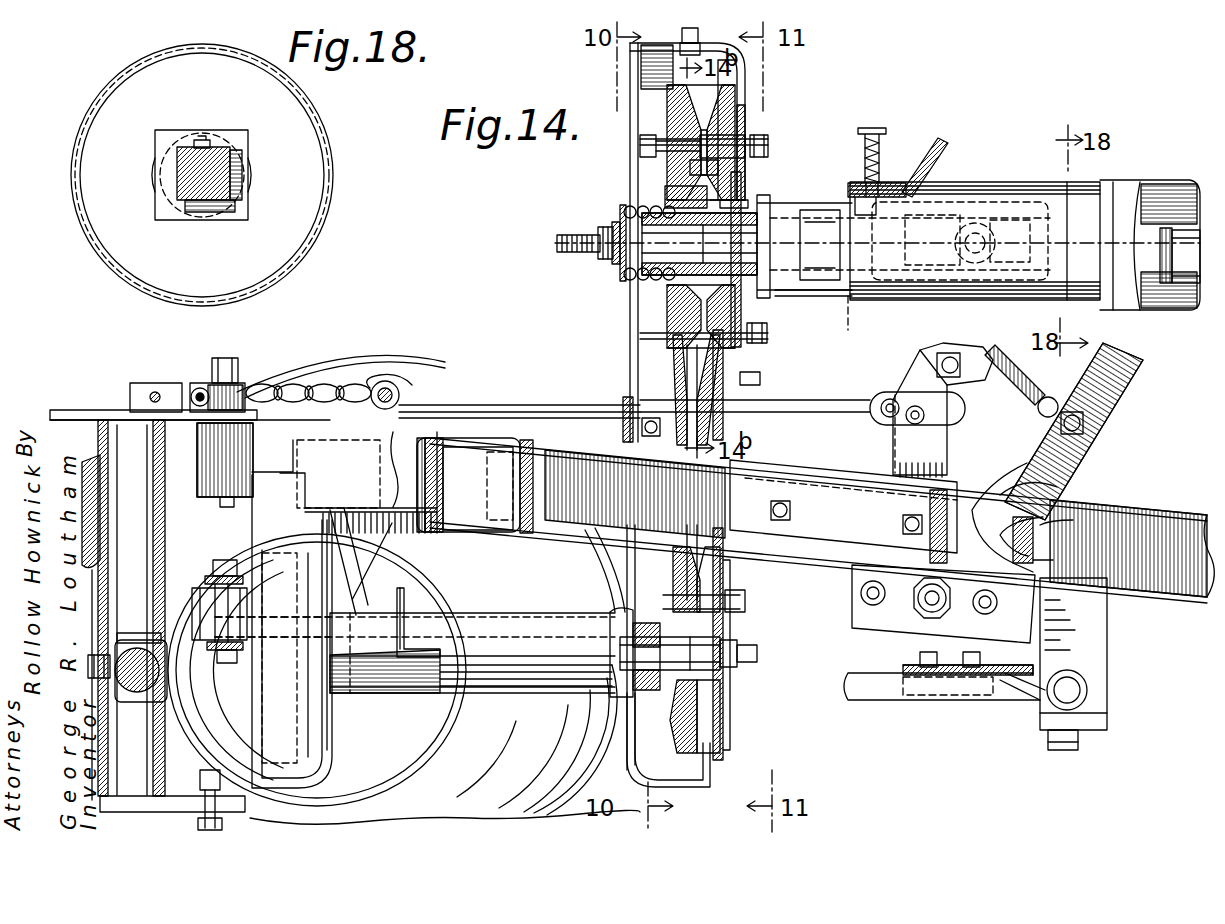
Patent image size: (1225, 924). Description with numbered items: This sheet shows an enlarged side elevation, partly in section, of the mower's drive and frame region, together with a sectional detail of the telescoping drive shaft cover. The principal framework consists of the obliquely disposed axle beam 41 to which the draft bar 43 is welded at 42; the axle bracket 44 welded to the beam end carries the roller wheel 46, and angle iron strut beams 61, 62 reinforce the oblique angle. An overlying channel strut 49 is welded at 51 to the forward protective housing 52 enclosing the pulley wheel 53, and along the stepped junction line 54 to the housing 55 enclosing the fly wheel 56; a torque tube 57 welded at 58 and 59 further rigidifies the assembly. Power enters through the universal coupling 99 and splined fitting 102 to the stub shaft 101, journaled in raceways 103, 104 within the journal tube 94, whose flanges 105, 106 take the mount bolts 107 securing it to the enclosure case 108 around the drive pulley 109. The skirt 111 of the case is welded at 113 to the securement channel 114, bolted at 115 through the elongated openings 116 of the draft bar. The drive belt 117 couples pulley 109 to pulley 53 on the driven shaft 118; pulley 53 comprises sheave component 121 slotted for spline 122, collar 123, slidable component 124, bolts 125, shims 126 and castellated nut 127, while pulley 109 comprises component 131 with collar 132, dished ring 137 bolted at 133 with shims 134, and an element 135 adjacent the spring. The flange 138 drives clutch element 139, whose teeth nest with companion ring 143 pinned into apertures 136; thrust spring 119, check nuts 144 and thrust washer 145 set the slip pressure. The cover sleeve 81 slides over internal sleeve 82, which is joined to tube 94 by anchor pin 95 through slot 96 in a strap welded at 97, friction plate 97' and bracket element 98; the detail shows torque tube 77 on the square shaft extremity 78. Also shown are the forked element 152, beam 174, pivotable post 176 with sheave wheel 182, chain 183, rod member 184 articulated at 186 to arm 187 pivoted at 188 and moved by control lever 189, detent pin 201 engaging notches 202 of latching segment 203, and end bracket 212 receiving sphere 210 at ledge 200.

In FIG. 14, the axle beam 41 is at (460, 534).
In FIG. 14, the weld 42 is at (533, 536).
In FIG. 14, the draft bar 43 is at (560, 445).
In FIG. 14, the axle bracket 44 is at (236, 545).
In FIG. 14, the roller wheel 46 is at (350, 366).
In FIG. 14, the channel strut 49 is at (412, 396).
In FIG. 14, the weld 51 is at (622, 430).
In FIG. 14, the protective housing 52 is at (627, 737).
In FIG. 14, the pulley wheel 53 is at (728, 690).
In FIG. 14, the stepped junction line 54 is at (256, 527).
In FIG. 14, the protective housing 55 is at (324, 733).
In FIG. 14, the fly wheel 56 is at (252, 717).
In FIG. 14, the torque tube 57 is at (493, 698).
In FIG. 14, the weld 58 is at (593, 580).
In FIG. 14, the weld 59 is at (348, 617).
In FIG. 14, the angle iron strut beam 61 is at (440, 595).
In FIG. 14, the angle iron strut beam 62 is at (401, 592).
In FIG. 18, the torque tube 77 is at (232, 134).
In FIG. 14, the torque tube 77 is at (1162, 270).
In FIG. 18, the shaft extremity 78 is at (178, 192).
In FIG. 14, the shaft extremity 78 is at (1162, 306).
In FIG. 18, the protective cover sleeve 81 is at (92, 104).
In FIG. 14, the protective cover sleeve 81 is at (1127, 182).
In FIG. 18, the internal sleeve 82 is at (315, 187).
In FIG. 14, the internal sleeve 82 is at (990, 183).
In FIG. 14, the journal tube 94 is at (772, 200).
In FIG. 14, the spring loaded anchor pin 95 is at (884, 147).
In FIG. 14, the elongated slot 96 is at (850, 192).
In FIG. 14, the weld 97 is at (802, 261).
In FIG. 14, the friction plate 97' is at (862, 154).
In FIG. 14, the bracket element 98 is at (925, 142).
In FIG. 14, the universal coupling 99 is at (958, 232).
In FIG. 14, the stub shaft 101 is at (766, 296).
In FIG. 14, the splined fitting 102 is at (906, 218).
In FIG. 14, the roller bearing raceway 103 is at (865, 317).
In FIG. 14, the roller bearing raceway 104 is at (736, 132).
In FIG. 14, the flange 105 is at (746, 150).
In FIG. 14, the flange 106 is at (742, 378).
In FIG. 14, the mount bolt 107 is at (770, 148).
In FIG. 14, the enclosure case 108 is at (760, 56).
In FIG. 14, the drive pulley 109 is at (654, 78).
In FIG. 14, the skirt 111 is at (752, 402).
In FIG. 14, the weld 113 is at (748, 458).
In FIG. 14, the securement channel 114 is at (903, 463).
In FIG. 14, the bolt 115 is at (858, 500).
In FIG. 14, the elongated opening 116 is at (1050, 483).
In FIG. 14, the drive belt 117 is at (649, 60).
In FIG. 14, the driven shaft 118 is at (632, 656).
In FIG. 14, the thrust spring 119 is at (652, 205).
In FIG. 14, the sheave component 121 is at (662, 597).
In FIG. 14, the shaft spline 122 is at (702, 657).
In FIG. 14, the collar 123 is at (718, 594).
In FIG. 14, the sheave component 124 is at (722, 706).
In FIG. 14, the bolt 125 is at (607, 623).
In FIG. 14, the shim 126 is at (707, 540).
In FIG. 14, the castellated nut 127 is at (738, 650).
In FIG. 14, the pulley component 131 is at (740, 300).
In FIG. 14, the collar 132 is at (660, 292).
In FIG. 14, the bolt 133 is at (645, 147).
In FIG. 14, the shim 134 is at (722, 125).
In FIG. 14, the spring 135 is at (622, 209).
In FIG. 14, the aperture 136 is at (667, 186).
In FIG. 14, the component element 137 is at (668, 103).
In FIG. 14, the flange 138 is at (703, 229).
In FIG. 14, the clutch element 139 is at (680, 305).
In FIG. 14, the companion ring 143 is at (620, 263).
In FIG. 14, the check nut 144 is at (600, 231).
In FIG. 14, the thrust washer 145 is at (622, 277).
In FIG. 14, the forked element 152 is at (210, 616).
In FIG. 14, the beam 174 is at (150, 682).
In FIG. 14, the pivotable post 176 is at (128, 770).
In FIG. 14, the sheave wheel 182 is at (212, 390).
In FIG. 14, the chain 183 is at (286, 388).
In FIG. 14, the rod member 184 is at (487, 396).
In FIG. 14, the articulation 186 is at (913, 405).
In FIG. 14, the arm 187 is at (945, 462).
In FIG. 14, the pivot 188 is at (930, 603).
In FIG. 14, the control lever 189 is at (1105, 394).
In FIG. 14, the ledge 200 is at (1090, 728).
In FIG. 14, the detent pin 201 is at (1073, 520).
In FIG. 14, the notch 202 is at (1053, 560).
In FIG. 14, the latching segment 203 is at (908, 549).
In FIG. 14, the sphere 210 is at (1097, 678).
In FIG. 14, the end bracket 212 is at (1020, 660).